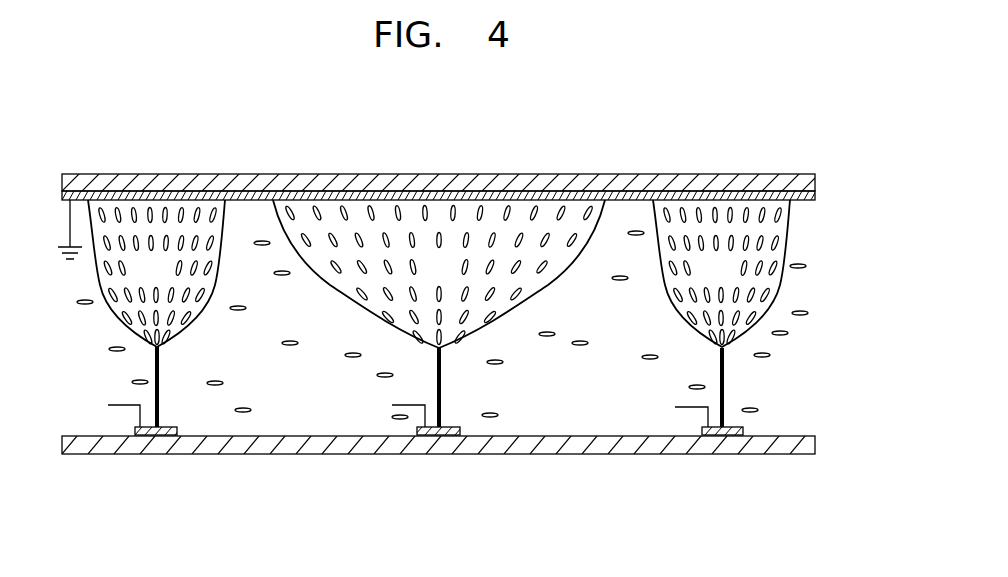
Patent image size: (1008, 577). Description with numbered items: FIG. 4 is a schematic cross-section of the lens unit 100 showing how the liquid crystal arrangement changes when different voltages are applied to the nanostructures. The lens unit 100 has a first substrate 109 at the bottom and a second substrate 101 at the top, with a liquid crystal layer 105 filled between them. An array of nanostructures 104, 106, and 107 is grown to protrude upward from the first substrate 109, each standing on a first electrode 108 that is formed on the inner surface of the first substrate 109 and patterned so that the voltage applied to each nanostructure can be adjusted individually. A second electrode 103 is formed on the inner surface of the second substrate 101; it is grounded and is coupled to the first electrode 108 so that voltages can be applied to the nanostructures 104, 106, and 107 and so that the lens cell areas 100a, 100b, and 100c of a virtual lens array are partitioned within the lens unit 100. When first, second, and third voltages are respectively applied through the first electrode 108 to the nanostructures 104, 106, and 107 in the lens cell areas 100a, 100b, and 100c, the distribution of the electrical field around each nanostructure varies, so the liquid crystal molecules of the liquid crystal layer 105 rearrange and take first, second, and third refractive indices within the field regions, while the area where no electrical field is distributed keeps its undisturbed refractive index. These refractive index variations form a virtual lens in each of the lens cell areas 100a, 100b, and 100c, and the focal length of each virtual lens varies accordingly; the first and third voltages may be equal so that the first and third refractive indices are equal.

The lens unit 100 is at (80, 152).
The second substrate 101 is at (815, 181).
The second electrode 103 is at (815, 199).
The nanostructure 104 is at (160, 369).
The liquid crystal layer 105 is at (308, 327).
The nanostructure 106 is at (442, 398).
The nanostructure 107 is at (725, 398).
The first electrode 108 is at (744, 429).
The first substrate 109 is at (815, 444).
The lens cell area 100a is at (258, 465).
The lens cell area 100b is at (628, 465).
The lens cell area 100c is at (827, 465).